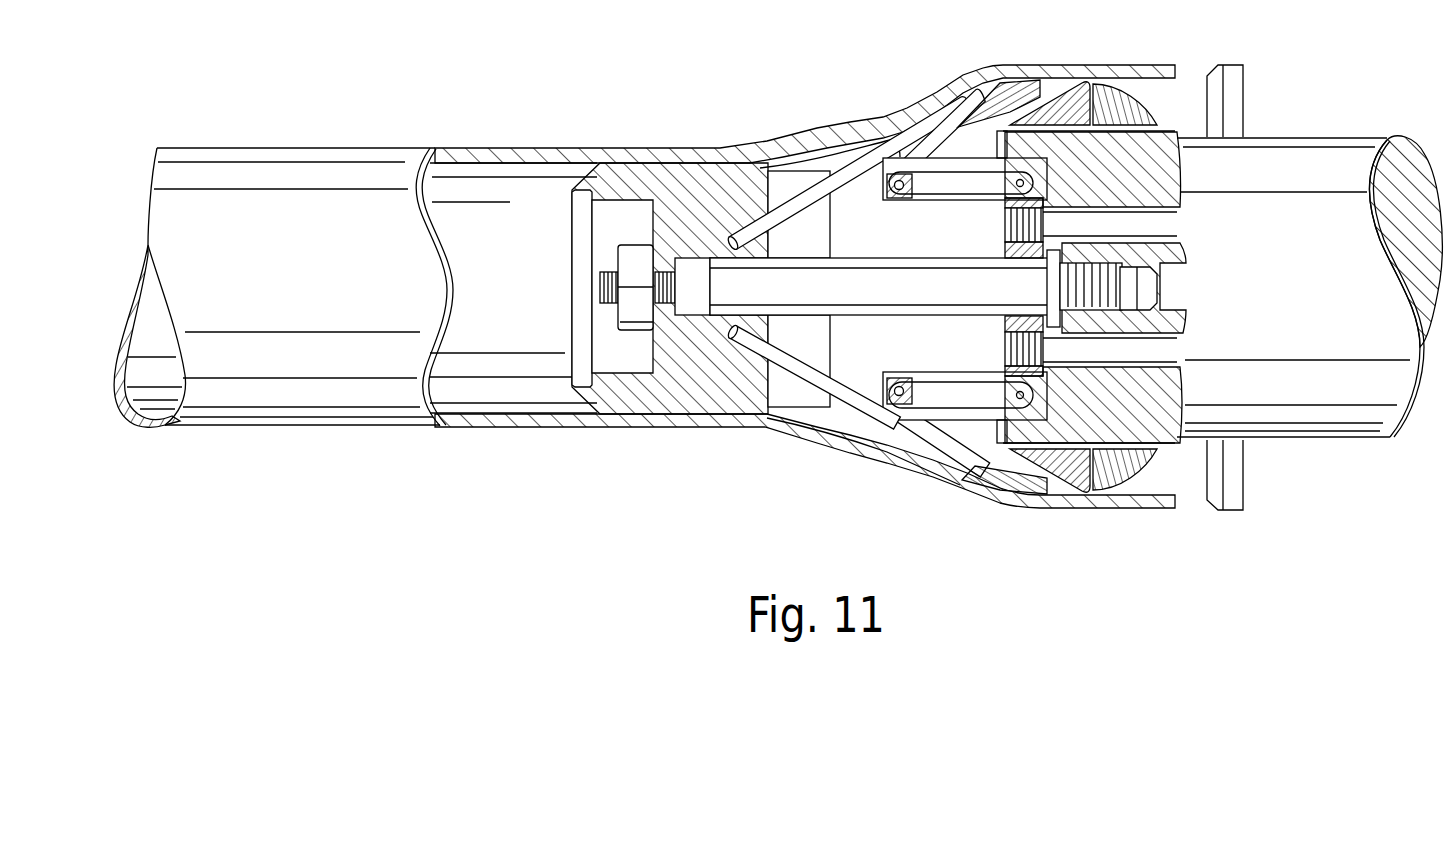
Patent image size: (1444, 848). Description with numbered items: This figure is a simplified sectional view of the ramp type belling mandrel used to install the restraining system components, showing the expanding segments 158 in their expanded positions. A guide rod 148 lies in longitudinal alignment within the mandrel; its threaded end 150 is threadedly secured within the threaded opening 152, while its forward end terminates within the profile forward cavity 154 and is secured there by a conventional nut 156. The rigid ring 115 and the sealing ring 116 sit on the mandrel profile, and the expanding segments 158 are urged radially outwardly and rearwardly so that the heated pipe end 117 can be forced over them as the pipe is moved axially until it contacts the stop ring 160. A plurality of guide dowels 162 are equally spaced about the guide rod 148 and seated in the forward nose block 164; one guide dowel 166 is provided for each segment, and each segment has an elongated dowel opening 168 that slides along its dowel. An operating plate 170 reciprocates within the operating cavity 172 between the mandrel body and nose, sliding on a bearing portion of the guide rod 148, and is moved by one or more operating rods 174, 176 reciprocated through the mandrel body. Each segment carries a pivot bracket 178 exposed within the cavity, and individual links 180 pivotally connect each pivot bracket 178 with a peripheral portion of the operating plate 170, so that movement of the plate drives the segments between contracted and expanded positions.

The heated pipe end 117 is at (288, 188).
The profile forward cavity 154 is at (620, 242).
The nut 156 is at (643, 264).
The forward nose block 164 is at (685, 353).
The guide rod 148 is at (725, 300).
The guide dowel 166 is at (811, 378).
The operating cavity 172 is at (867, 357).
The elongated dowel opening 168 is at (940, 452).
The guide dowels 162 is at (1055, 357).
The pivot bracket 178 is at (880, 120).
The link 180 is at (945, 183).
The expanding segments 158 is at (1003, 85).
The rigid ring 115 is at (1055, 100).
The sealing ring 116 is at (1133, 103).
The operating plate 170 is at (1003, 202).
The operating rod 174 is at (1118, 218).
The threaded end 150 is at (1118, 256).
The threaded opening 152 is at (1157, 292).
The operating rod 176 is at (1177, 372).
The stop ring 160 is at (1235, 492).